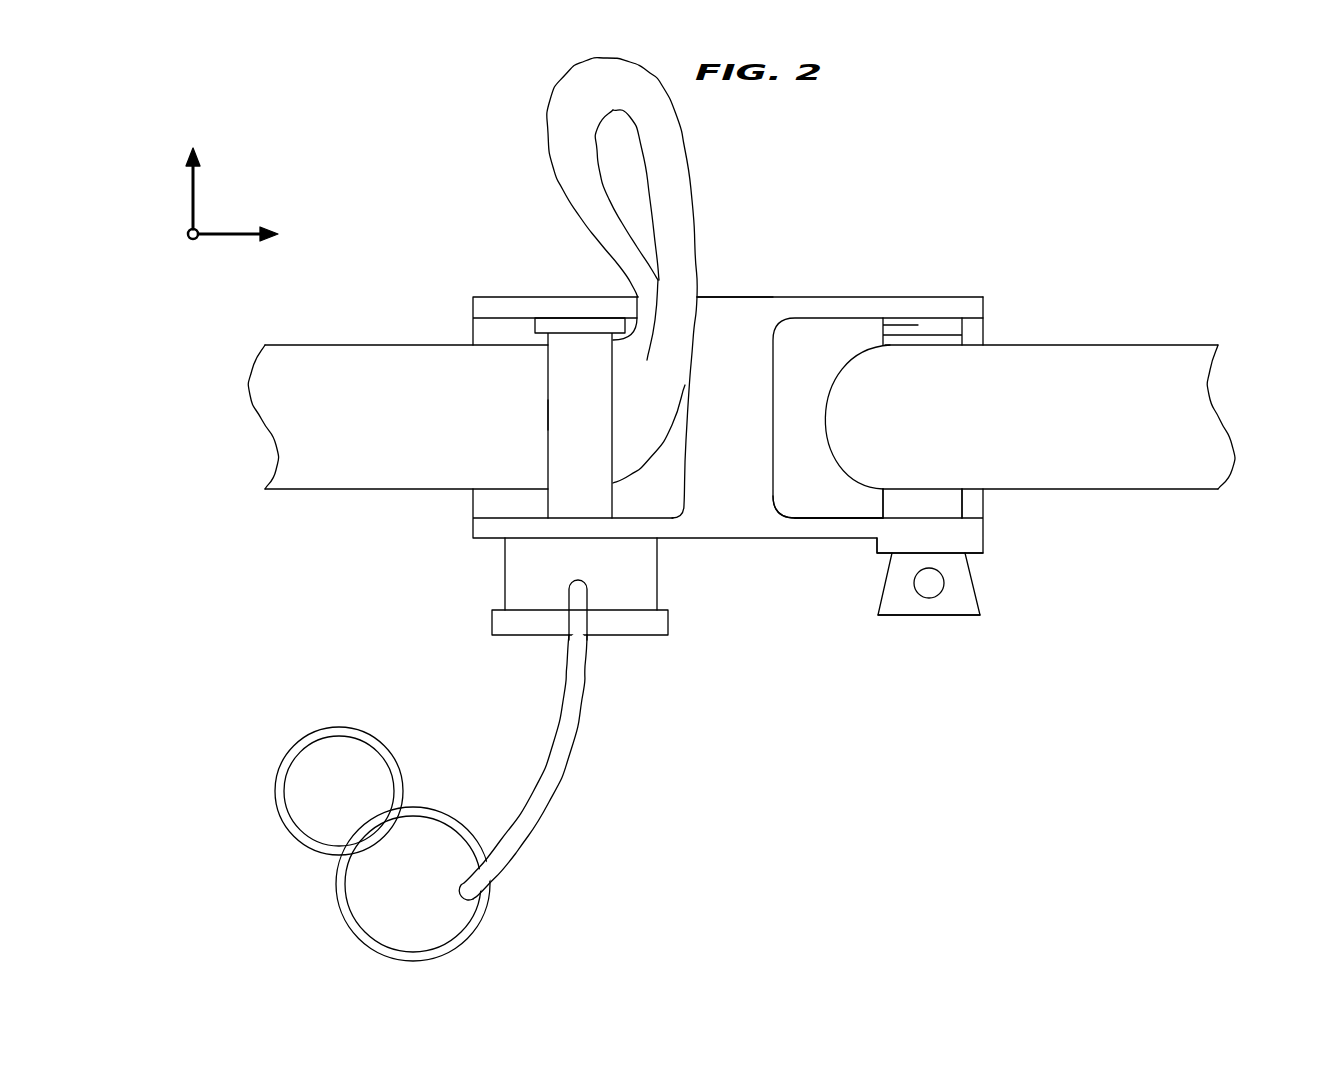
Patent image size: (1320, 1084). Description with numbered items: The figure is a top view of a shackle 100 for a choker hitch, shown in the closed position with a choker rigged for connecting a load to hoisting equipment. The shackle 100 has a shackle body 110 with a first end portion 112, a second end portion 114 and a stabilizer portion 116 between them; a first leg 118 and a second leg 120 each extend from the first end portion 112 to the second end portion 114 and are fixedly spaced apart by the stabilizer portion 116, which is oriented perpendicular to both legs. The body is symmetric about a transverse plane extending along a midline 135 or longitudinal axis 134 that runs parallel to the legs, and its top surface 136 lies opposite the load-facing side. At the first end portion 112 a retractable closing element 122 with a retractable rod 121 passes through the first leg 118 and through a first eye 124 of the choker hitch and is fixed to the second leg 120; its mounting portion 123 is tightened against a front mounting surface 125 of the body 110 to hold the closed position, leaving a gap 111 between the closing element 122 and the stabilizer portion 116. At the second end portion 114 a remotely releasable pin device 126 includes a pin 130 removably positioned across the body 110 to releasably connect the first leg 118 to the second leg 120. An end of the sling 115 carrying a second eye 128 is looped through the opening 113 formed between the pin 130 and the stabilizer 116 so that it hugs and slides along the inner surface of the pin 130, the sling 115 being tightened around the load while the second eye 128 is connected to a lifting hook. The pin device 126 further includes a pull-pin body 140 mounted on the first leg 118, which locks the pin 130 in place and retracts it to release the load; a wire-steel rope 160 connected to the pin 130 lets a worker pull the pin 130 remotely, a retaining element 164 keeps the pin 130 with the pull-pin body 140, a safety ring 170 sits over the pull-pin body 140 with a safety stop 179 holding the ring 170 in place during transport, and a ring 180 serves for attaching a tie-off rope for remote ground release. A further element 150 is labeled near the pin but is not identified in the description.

The shackle 100 is at (1000, 288).
The shackle body 110 is at (758, 293).
The gap 111 is at (847, 330).
The first end portion 112 is at (947, 280).
The opening 113 is at (660, 473).
The second end portion 114 is at (512, 293).
The sling 115 is at (342, 480).
The stabilizer portion 116 is at (744, 541).
The first leg 118 is at (858, 525).
The second leg 120 is at (598, 334).
The retractable rod 121 is at (973, 487).
The retractable closing element 122 is at (925, 618).
The mounting portion 123 is at (960, 618).
The first eye 124 is at (930, 503).
The front mounting surface 125 is at (738, 458).
The remotely releasable pin device 126 is at (497, 630).
The second eye 128 is at (664, 130).
The pin 130 is at (565, 400).
The longitudinal axis 134 is at (228, 230).
The midline 135 is at (195, 185).
The top surface 136 is at (733, 360).
The pull-pin body 140 is at (505, 580).
The pin 150 is at (578, 330).
The wire-steel rope 160 is at (528, 840).
The retaining element 164 is at (660, 625).
The safety ring 170 is at (442, 810).
The safety stop 179 is at (570, 592).
The ring 180 is at (335, 728).